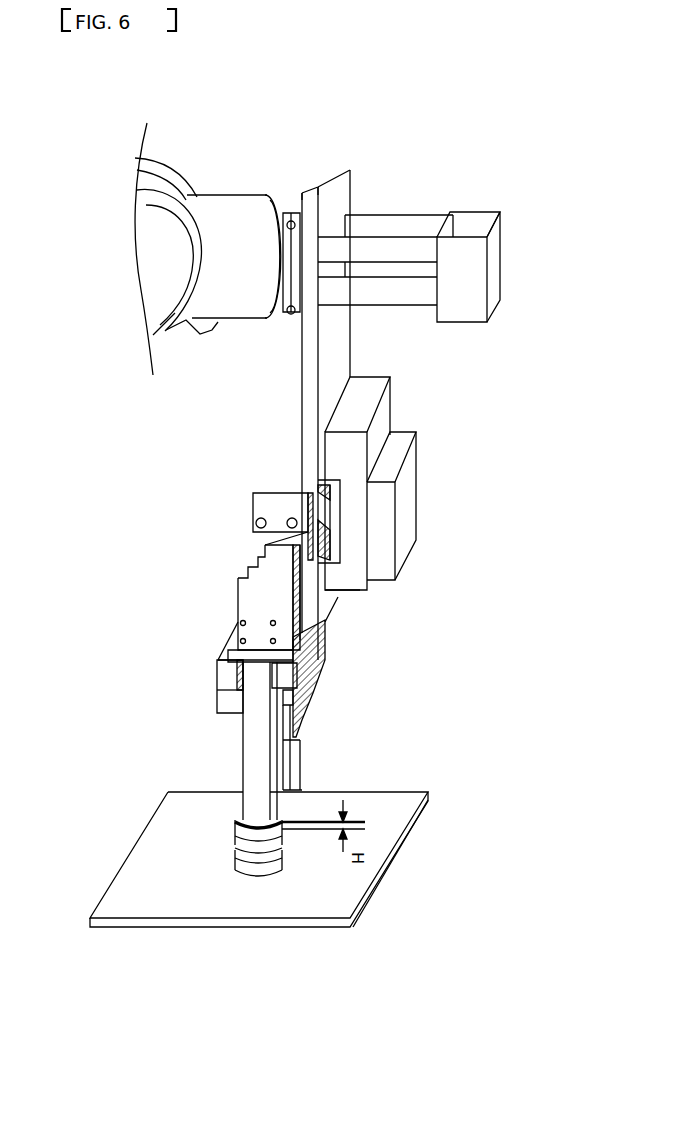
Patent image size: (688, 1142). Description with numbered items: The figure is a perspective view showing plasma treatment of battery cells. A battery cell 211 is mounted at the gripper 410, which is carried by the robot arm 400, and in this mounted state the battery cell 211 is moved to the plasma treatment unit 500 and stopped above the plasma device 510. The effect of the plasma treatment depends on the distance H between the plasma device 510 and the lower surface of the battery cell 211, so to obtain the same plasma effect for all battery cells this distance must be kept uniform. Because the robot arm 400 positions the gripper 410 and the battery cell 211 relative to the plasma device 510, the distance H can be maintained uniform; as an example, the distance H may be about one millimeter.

The robot arm 400 is at (221, 212).
The gripper 410 is at (217, 703).
The battery cell 211 is at (243, 750).
The plasma treatment unit 500 is at (432, 866).
The plasma device 510 is at (243, 870).